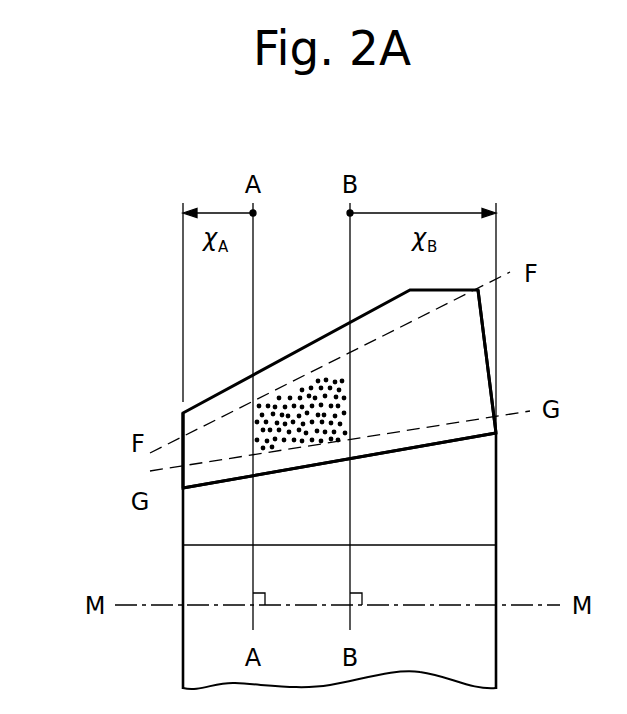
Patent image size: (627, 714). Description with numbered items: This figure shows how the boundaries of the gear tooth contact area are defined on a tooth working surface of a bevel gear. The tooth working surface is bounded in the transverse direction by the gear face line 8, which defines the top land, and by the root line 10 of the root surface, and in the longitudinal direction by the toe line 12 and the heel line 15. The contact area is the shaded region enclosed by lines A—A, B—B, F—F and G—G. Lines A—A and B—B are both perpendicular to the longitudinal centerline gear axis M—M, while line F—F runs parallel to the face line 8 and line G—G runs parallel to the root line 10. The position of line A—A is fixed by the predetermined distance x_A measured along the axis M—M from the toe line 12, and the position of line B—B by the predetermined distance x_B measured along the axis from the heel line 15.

The gear face line 8 is at (310, 343).
The root line 10 is at (422, 450).
The toe line 12 is at (183, 458).
The heel line 15 is at (485, 352).